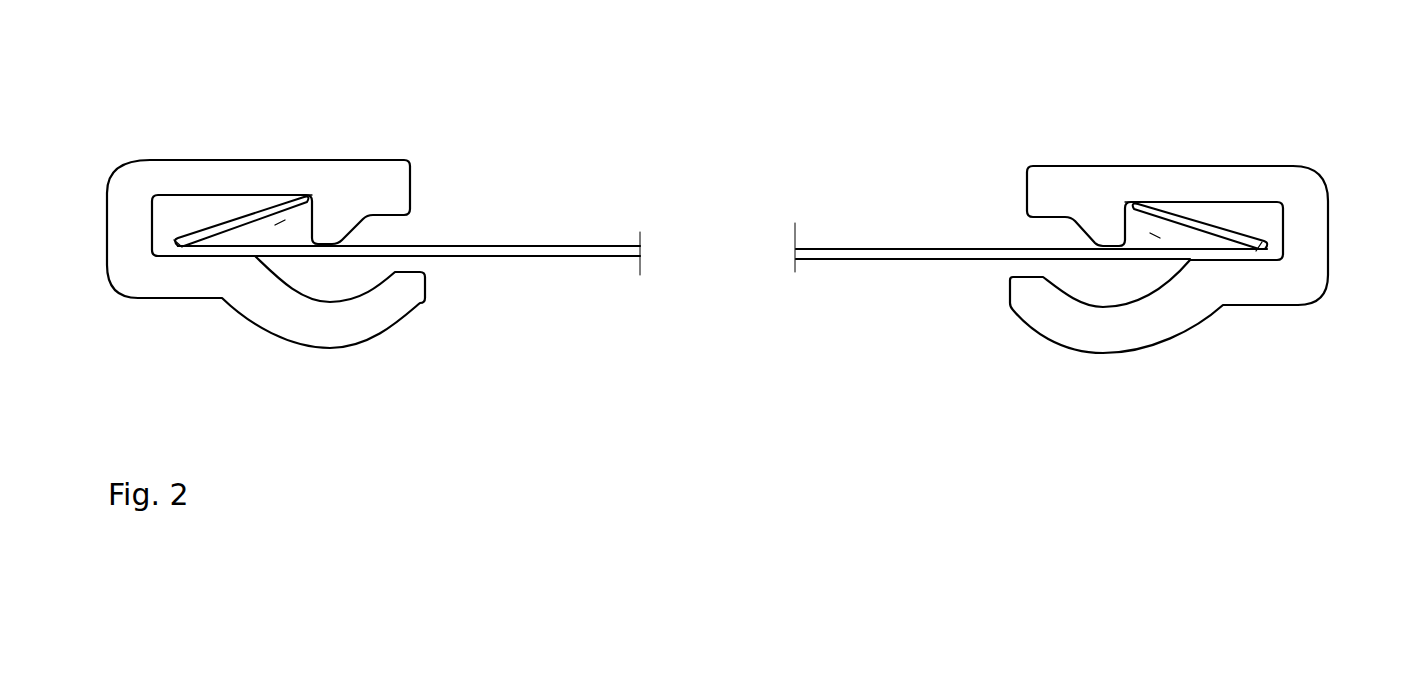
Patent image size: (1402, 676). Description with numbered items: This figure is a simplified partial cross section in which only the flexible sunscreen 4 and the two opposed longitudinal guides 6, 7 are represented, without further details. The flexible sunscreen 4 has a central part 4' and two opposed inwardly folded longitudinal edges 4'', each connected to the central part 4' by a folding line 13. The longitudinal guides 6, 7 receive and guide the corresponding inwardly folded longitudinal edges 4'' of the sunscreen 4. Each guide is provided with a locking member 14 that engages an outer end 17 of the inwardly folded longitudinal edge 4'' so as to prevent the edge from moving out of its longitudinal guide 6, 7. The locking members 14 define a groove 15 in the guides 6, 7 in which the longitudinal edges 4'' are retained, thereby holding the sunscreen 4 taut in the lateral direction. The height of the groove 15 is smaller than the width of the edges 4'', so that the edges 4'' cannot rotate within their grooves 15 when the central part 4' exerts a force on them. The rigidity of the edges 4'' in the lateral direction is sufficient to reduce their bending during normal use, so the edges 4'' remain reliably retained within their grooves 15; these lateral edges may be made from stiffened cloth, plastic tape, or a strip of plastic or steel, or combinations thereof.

The flexible sunscreen 4 is at (722, 177).
The central part 4' is at (500, 152).
The inwardly folded longitudinal edges 4'' is at (721, 147).
The longitudinal guide 6 is at (125, 172).
The longitudinal guide 7 is at (1268, 181).
The folding line 13 is at (172, 237).
The locking member 14 is at (322, 213).
The groove 15 is at (282, 222).
The outer end 17 is at (312, 190).